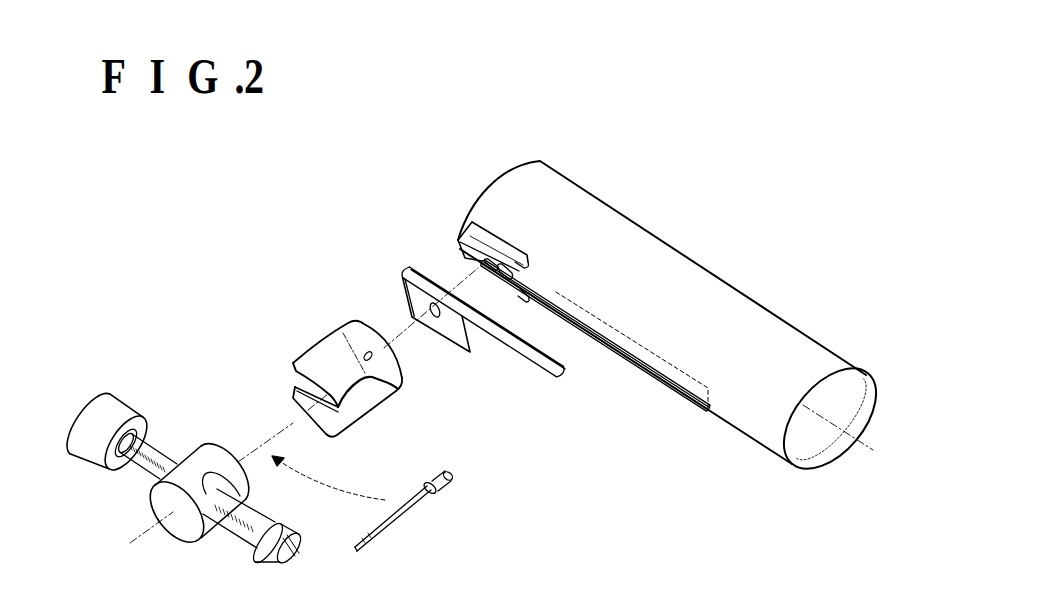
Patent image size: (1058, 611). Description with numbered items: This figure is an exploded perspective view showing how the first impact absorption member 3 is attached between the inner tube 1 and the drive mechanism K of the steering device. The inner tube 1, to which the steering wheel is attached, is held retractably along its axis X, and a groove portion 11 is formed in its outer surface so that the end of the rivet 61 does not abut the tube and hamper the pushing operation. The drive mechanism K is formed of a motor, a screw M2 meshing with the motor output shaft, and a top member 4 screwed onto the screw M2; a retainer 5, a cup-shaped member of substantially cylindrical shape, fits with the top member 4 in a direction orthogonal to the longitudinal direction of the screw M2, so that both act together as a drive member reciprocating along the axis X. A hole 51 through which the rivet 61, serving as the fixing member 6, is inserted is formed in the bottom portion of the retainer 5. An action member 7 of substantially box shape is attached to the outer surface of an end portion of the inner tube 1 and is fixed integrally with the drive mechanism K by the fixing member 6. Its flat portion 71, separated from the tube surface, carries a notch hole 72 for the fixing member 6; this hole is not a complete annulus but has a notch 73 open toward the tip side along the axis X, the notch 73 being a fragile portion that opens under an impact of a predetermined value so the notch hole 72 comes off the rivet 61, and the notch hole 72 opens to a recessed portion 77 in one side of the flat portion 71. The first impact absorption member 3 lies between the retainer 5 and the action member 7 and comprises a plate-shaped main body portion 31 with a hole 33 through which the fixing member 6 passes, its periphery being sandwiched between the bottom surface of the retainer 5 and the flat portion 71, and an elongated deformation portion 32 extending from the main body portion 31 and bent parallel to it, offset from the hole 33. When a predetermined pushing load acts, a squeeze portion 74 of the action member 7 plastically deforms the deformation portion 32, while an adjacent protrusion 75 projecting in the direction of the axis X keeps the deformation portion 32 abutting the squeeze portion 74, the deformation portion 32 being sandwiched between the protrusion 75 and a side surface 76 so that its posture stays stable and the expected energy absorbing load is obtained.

The inner tube 1 is at (638, 248).
The groove portion 11 is at (653, 370).
The first impact absorption member 3 is at (453, 350).
The main body portion 31 is at (408, 351).
The deformation portion 32 is at (525, 365).
The hole 33 is at (426, 309).
The top member 4 is at (203, 444).
The drive mechanism K is at (177, 480).
The screw M2 is at (142, 473).
The retainer 5 is at (321, 366).
The hole 51 is at (353, 357).
The fixing member 6 is at (447, 511).
The rivet 61 is at (400, 516).
The action member 7 is at (547, 275).
The flat portion 71 is at (472, 218).
The notch hole 72 is at (458, 268).
The notch 73 is at (530, 266).
The squeeze portion 74 is at (456, 238).
The protrusion 75 is at (457, 242).
The side surface 76 is at (507, 238).
The recessed portion 77 is at (535, 306).
The axis X is at (886, 457).